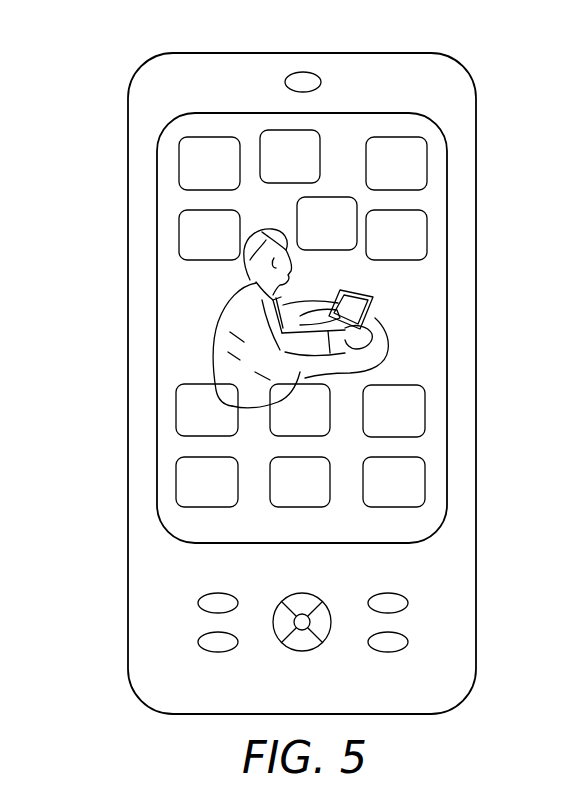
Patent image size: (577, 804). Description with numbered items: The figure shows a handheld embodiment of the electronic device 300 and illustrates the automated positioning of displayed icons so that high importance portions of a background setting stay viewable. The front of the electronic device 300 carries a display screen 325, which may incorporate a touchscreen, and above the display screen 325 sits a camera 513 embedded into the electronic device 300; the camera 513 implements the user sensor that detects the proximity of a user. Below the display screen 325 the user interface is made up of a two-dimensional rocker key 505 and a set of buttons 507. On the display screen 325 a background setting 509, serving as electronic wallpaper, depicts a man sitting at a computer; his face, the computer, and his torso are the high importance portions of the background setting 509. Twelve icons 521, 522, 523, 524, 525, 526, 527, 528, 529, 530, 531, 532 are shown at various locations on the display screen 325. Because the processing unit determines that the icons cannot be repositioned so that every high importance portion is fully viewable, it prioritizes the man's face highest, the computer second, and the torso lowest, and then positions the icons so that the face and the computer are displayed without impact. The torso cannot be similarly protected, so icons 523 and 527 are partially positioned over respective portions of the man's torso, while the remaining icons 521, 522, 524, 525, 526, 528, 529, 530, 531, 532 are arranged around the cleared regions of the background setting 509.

The electronic device 300 is at (476, 123).
The display screen 325 is at (447, 319).
The camera 513 is at (303, 72).
The background setting 509 is at (381, 304).
The two-dimensional rocker key 505 is at (302, 651).
The set of buttons 507 is at (218, 652).
The icon 521 is at (213, 137).
The icon 522 is at (179, 237).
The icon 523 is at (176, 410).
The icon 524 is at (176, 481).
The icon 525 is at (298, 130).
The icon 526 is at (340, 197).
The icon 527 is at (330, 418).
The icon 528 is at (300, 508).
The icon 529 is at (427, 162).
The icon 530 is at (427, 233).
The icon 531 is at (425, 410).
The icon 532 is at (425, 481).